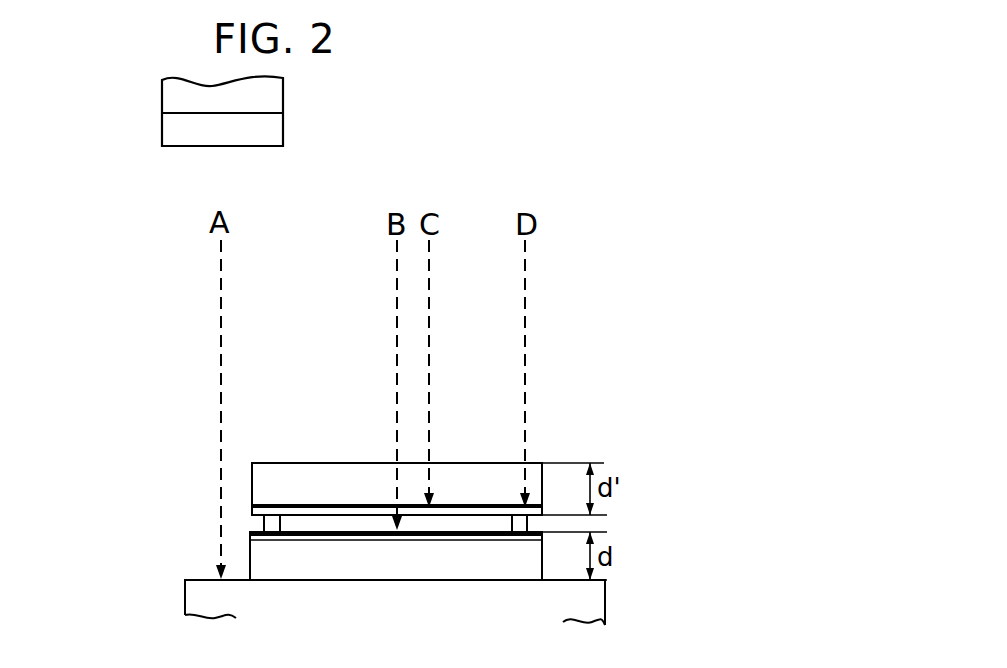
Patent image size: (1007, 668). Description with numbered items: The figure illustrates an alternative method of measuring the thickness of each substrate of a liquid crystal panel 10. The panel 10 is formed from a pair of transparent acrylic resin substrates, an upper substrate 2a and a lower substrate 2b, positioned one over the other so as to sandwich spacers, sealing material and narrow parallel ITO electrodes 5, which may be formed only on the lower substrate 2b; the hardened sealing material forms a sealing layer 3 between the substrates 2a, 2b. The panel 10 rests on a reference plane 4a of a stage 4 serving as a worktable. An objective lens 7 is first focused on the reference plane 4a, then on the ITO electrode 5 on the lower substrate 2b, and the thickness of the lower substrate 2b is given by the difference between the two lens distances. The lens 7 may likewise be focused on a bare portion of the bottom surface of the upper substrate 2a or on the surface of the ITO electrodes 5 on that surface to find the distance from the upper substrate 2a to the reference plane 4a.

The objective lens 7 is at (275, 102).
The panel 10 is at (192, 500).
The upper substrate 2a is at (462, 475).
The lower substrate 2b is at (501, 568).
The sealing layer 3 is at (277, 514).
The ITO electrodes 5 is at (323, 532).
The stage 4 is at (596, 612).
The reference plane 4a is at (207, 577).